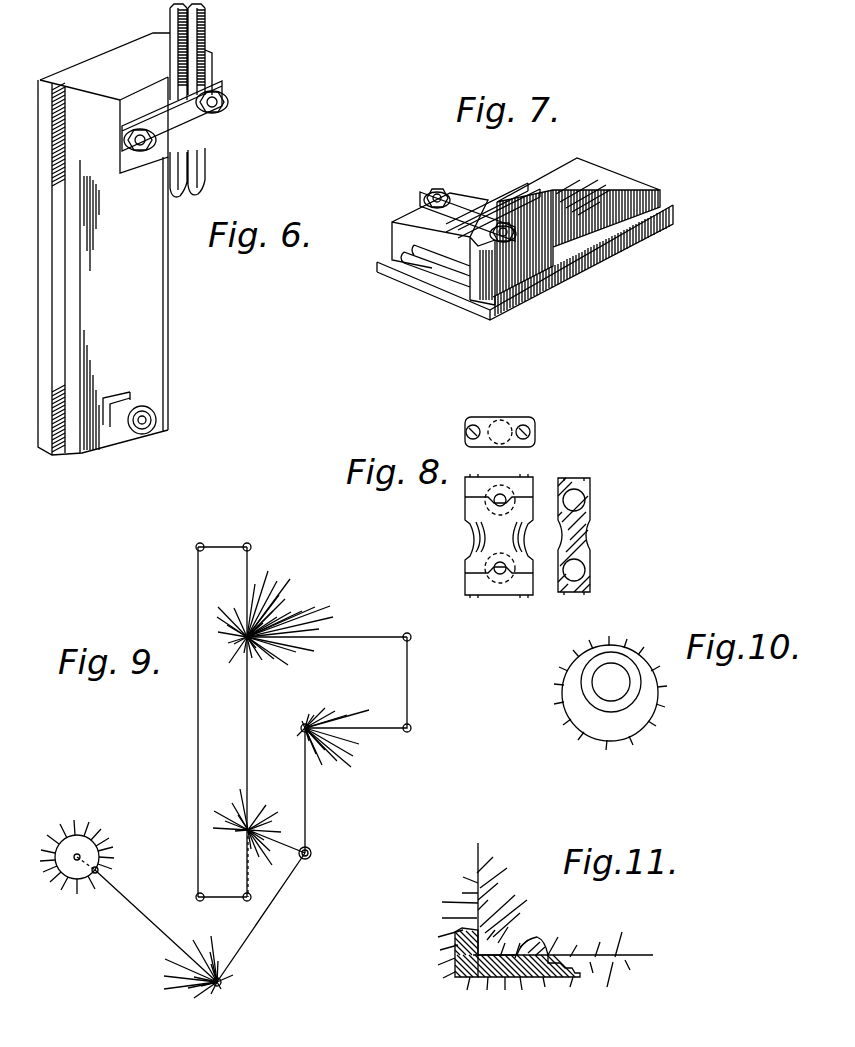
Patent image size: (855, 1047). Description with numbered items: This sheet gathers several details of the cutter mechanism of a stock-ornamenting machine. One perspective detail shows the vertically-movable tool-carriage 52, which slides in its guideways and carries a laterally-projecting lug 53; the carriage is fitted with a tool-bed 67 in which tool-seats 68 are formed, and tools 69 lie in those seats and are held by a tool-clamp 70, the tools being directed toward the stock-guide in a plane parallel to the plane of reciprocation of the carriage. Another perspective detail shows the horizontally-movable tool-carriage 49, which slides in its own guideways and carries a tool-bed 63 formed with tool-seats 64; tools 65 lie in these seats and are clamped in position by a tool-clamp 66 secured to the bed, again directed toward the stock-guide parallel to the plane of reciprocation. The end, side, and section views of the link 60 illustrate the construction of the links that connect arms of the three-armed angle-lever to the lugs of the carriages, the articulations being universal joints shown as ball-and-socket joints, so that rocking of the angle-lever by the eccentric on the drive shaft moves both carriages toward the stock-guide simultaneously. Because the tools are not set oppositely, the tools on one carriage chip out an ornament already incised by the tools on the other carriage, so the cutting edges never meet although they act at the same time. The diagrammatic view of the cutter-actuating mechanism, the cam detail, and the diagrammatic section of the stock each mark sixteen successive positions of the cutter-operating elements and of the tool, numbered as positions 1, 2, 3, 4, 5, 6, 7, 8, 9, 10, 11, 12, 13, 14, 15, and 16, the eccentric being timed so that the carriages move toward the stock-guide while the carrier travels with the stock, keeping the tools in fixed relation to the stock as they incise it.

In FIG. 7, the tool-carriage 49 is at (596, 250).
In FIG. 6, the tool-carriage 52 is at (103, 267).
In FIG. 6, the laterally-projecting lug 53 is at (140, 436).
In FIG. 8, the link 60 is at (566, 486).
In FIG. 7, the tool-bed 63 is at (417, 222).
In FIG. 7, the tool-seats 64 is at (470, 268).
In FIG. 7, the tools 65 is at (542, 200).
In FIG. 7, the tool-clamp 66 is at (470, 194).
In FIG. 6, the tool-bed 67 is at (148, 98).
In FIG. 6, the tool-seats 68 is at (165, 72).
In FIG. 6, the tools 69 is at (188, 82).
In FIG. 6, the tool-clamp 70 is at (182, 118).
In FIG. 9, the position 1 is at (213, 781).
In FIG. 10, the position 1 is at (609, 637).
In FIG. 11, the position 1 is at (515, 939).
In FIG. 9, the position 2 is at (213, 783).
In FIG. 10, the position 2 is at (629, 636).
In FIG. 11, the position 2 is at (510, 945).
In FIG. 9, the position 3 is at (211, 789).
In FIG. 10, the position 3 is at (646, 643).
In FIG. 11, the position 3 is at (511, 952).
In FIG. 9, the position 4 is at (208, 795).
In FIG. 10, the position 4 is at (661, 662).
In FIG. 11, the position 4 is at (493, 960).
In FIG. 9, the position 5 is at (201, 821).
In FIG. 10, the position 5 is at (669, 685).
In FIG. 11, the position 5 is at (452, 986).
In FIG. 9, the position 6 is at (196, 807).
In FIG. 10, the position 6 is at (666, 708).
In FIG. 11, the position 6 is at (473, 944).
In FIG. 9, the position 7 is at (194, 805).
In FIG. 10, the position 7 is at (657, 729).
In FIG. 11, the position 7 is at (472, 946).
In FIG. 9, the position 8 is at (189, 797).
In FIG. 10, the position 8 is at (634, 746).
In FIG. 11, the position 8 is at (477, 942).
In FIG. 9, the position 9 is at (188, 796).
In FIG. 10, the position 9 is at (606, 752).
In FIG. 11, the position 9 is at (499, 932).
In FIG. 9, the position 10 is at (190, 789).
In FIG. 10, the position 10 is at (573, 746).
In FIG. 11, the position 10 is at (507, 925).
In FIG. 9, the position 11 is at (196, 795).
In FIG. 10, the position 11 is at (559, 728).
In FIG. 11, the position 11 is at (531, 919).
In FIG. 9, the position 12 is at (205, 787).
In FIG. 10, the position 12 is at (552, 705).
In FIG. 11, the position 12 is at (541, 912).
In FIG. 9, the position 13 is at (205, 774).
In FIG. 10, the position 13 is at (549, 682).
In FIG. 11, the position 13 is at (561, 913).
In FIG. 9, the position 14 is at (209, 768).
In FIG. 10, the position 14 is at (553, 661).
In FIG. 11, the position 14 is at (550, 925).
In FIG. 9, the position 15 is at (216, 773).
In FIG. 10, the position 15 is at (568, 645).
In FIG. 11, the position 15 is at (543, 928).
In FIG. 9, the position 16 is at (218, 773).
In FIG. 10, the position 16 is at (587, 637).
In FIG. 11, the position 16 is at (531, 943).